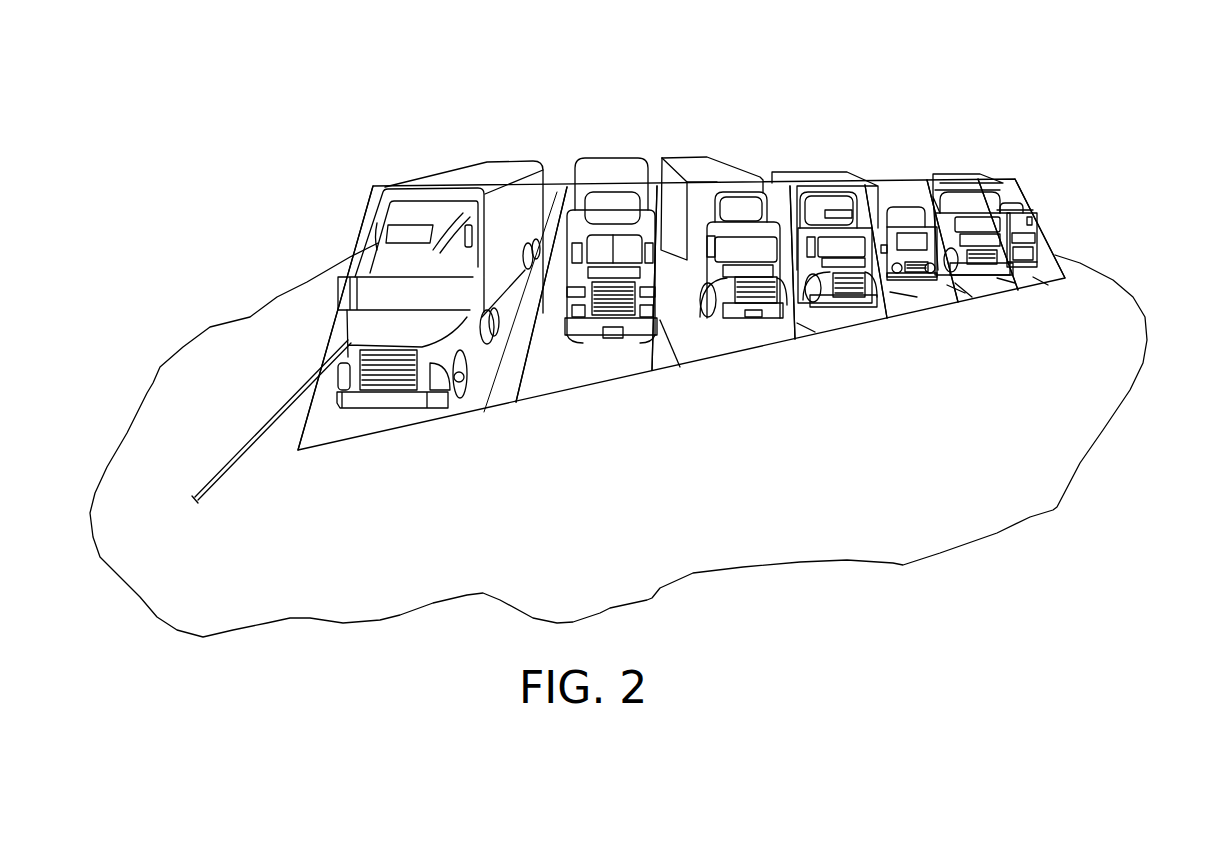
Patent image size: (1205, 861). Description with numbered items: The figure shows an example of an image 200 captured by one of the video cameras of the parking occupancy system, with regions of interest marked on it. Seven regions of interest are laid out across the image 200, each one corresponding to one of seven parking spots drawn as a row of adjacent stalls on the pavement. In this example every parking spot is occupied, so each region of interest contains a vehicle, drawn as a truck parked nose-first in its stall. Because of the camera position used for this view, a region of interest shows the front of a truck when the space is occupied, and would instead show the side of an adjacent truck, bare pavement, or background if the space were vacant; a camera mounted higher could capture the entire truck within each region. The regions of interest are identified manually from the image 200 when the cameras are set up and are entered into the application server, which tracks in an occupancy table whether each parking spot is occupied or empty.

The image 200 is at (447, 67).